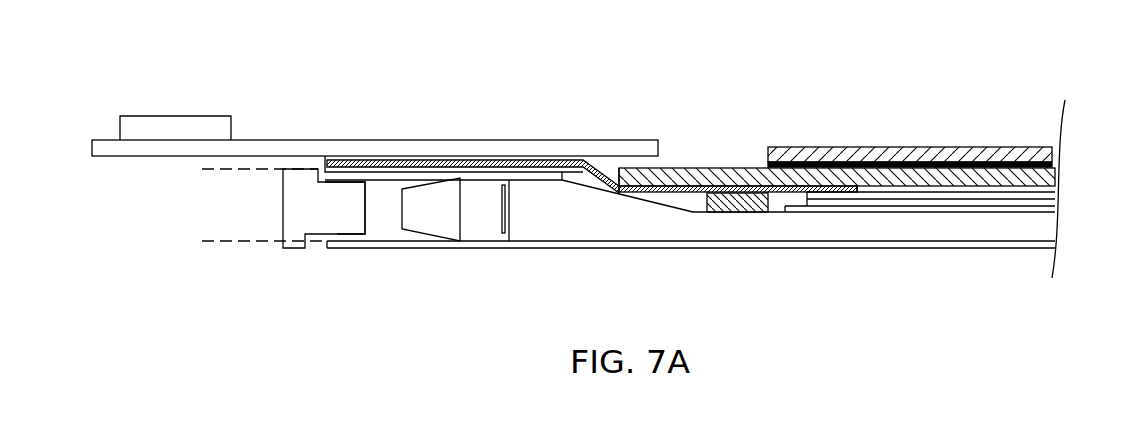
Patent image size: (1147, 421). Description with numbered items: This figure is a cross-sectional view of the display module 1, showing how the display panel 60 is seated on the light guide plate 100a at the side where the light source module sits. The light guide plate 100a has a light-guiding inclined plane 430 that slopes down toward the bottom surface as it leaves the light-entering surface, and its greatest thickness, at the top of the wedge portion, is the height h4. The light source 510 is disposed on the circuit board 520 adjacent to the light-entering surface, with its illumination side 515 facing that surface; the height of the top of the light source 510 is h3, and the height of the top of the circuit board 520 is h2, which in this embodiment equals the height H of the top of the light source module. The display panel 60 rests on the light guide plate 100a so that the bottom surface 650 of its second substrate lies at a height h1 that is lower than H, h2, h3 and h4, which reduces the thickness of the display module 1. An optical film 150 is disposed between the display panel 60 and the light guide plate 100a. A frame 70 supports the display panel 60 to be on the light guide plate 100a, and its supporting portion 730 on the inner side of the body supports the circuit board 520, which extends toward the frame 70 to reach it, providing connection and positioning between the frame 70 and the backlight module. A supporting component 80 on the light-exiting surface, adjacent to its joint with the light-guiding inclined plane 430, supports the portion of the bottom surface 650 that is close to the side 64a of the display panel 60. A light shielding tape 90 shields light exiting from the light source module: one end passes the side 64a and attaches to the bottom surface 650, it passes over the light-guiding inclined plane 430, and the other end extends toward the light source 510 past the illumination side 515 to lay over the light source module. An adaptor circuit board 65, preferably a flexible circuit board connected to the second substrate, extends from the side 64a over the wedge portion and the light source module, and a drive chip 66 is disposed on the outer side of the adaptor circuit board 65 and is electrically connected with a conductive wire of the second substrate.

The display module 1 is at (82, 48).
The adaptor circuit board 65 is at (108, 148).
The drive chip 66 is at (147, 123).
The frame 70 is at (291, 212).
The supporting portion 730 is at (347, 207).
The circuit board 520 is at (448, 177).
The light shielding tape 90 is at (628, 193).
The light source 510 is at (402, 215).
The illumination side 515 is at (508, 213).
The side of the display panel 64a is at (618, 178).
The display panel 60 is at (732, 152).
The light-guiding inclined plane 430 is at (653, 208).
The supporting component 80 is at (762, 213).
The optical film 150 is at (949, 205).
The bottom surface of the second substrate 650 is at (860, 186).
The light guide plate 100a is at (1002, 228).
The height of the top of the light source module H is at (210, 169).
The height of the bottom surface of the second substrate h1 is at (912, 186).
The height of the top of the circuit board h2 is at (336, 169).
The height of the top of the light source h3 is at (477, 179).
The height of the top of the wedge portion h4 is at (533, 185).